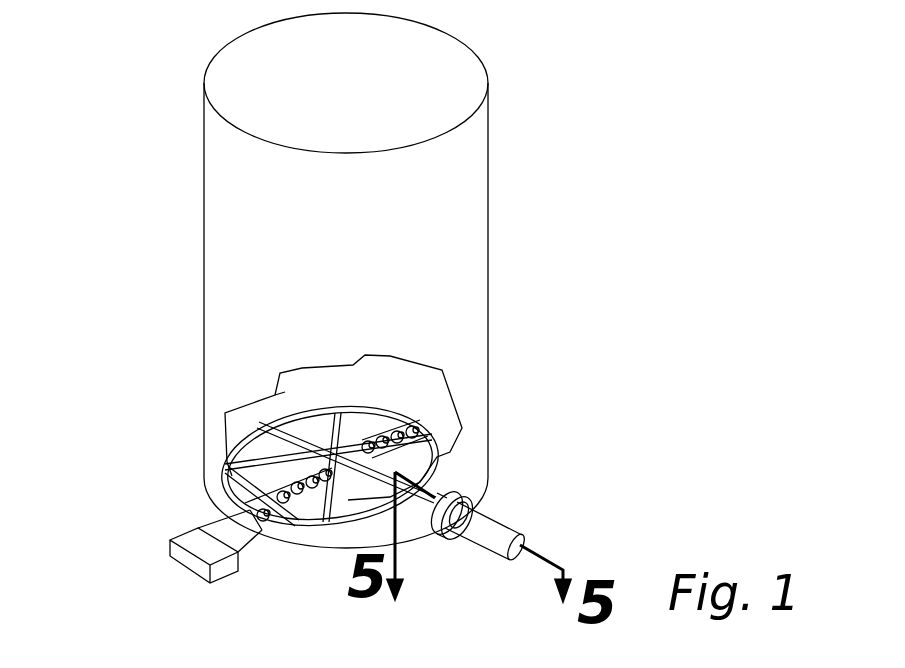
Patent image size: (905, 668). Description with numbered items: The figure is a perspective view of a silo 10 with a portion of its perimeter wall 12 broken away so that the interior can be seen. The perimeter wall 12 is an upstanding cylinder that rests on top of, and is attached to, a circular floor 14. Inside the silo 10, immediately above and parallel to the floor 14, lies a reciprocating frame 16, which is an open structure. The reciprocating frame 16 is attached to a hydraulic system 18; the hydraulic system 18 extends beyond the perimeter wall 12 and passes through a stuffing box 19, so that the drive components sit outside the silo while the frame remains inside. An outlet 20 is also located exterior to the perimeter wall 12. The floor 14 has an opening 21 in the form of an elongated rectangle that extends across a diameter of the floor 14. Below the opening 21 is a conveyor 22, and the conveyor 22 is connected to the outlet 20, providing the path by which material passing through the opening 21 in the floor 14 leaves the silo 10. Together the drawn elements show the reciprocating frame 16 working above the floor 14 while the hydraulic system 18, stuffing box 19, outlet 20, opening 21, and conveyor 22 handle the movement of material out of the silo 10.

The silo 10 is at (175, 207).
The perimeter wall 12 is at (465, 229).
The floor 14 is at (450, 443).
The reciprocating frame 16 is at (443, 464).
The hydraulic system 18 is at (498, 537).
The stuffing box 19 is at (450, 497).
The outlet 20 is at (168, 553).
The opening 21 is at (312, 505).
The conveyor 22 is at (292, 494).